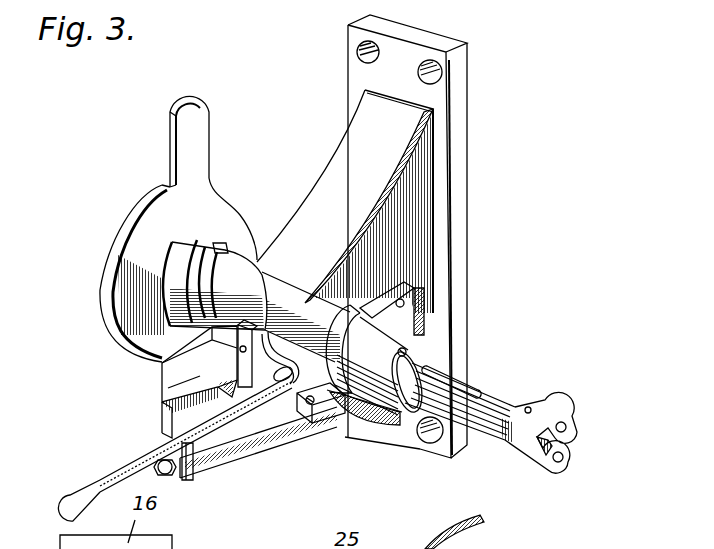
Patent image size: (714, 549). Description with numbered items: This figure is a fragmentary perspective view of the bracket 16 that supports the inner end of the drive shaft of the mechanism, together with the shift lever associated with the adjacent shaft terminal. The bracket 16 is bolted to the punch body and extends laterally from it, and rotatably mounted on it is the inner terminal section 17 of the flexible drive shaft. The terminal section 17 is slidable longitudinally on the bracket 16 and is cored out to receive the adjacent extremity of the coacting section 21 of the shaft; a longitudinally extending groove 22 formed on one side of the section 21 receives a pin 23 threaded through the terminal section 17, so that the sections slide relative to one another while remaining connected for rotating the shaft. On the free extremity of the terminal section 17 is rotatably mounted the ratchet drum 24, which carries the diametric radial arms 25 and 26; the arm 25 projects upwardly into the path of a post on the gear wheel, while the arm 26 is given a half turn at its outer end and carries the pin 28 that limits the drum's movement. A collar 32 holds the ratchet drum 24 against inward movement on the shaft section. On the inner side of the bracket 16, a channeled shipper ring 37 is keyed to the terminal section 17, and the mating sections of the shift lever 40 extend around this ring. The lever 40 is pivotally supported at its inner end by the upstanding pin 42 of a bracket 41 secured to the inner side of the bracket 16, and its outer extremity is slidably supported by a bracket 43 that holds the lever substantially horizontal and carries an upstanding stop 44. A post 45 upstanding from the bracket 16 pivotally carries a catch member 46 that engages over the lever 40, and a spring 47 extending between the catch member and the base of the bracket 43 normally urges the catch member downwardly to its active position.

The bracket 16 is at (470, 180).
The inner terminal section 17 is at (393, 405).
The coacting section 21 is at (495, 400).
The longitudinally extending groove 22 is at (463, 388).
The pin 23 is at (408, 352).
The ratchet drum 24 is at (222, 210).
The arm 25 is at (198, 143).
The arm 26 is at (182, 480).
The pin 28 is at (200, 453).
The collar 32 is at (243, 283).
The channeled shipper ring 37 is at (347, 323).
The shift lever 40 is at (200, 452).
The bracket 41 is at (345, 201).
The upstanding pin 42 is at (404, 307).
The bracket 43 is at (288, 412).
The stop 44 is at (318, 424).
The post 45 is at (235, 340).
The catch member 46 is at (268, 330).
The spring 47 is at (184, 389).